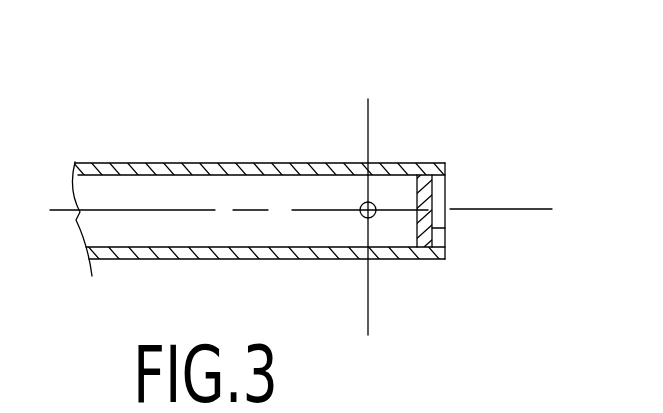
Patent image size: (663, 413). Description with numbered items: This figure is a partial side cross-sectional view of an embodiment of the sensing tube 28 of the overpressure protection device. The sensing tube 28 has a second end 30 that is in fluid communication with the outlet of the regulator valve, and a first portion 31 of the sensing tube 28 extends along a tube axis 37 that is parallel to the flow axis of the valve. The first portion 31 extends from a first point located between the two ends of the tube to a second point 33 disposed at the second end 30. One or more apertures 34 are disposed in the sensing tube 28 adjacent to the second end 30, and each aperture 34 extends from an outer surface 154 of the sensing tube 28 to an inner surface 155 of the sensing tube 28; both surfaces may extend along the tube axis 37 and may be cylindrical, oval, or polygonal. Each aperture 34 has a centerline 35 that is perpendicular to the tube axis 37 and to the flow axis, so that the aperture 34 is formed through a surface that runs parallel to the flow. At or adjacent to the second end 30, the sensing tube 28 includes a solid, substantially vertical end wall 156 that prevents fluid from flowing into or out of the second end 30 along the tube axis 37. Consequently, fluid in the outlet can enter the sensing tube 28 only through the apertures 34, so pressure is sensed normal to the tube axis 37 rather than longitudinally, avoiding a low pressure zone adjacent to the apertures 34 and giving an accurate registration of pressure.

The sensing tube 28 is at (290, 199).
The second end 30 is at (427, 270).
The first portion 31 is at (130, 147).
The second point 33 is at (442, 160).
The apertures 34 is at (355, 164).
The centerline 35 is at (372, 130).
The tube axis 37 is at (507, 208).
The outer surface 154 is at (284, 164).
The inner surface 155 is at (162, 176).
The end wall 156 is at (447, 228).